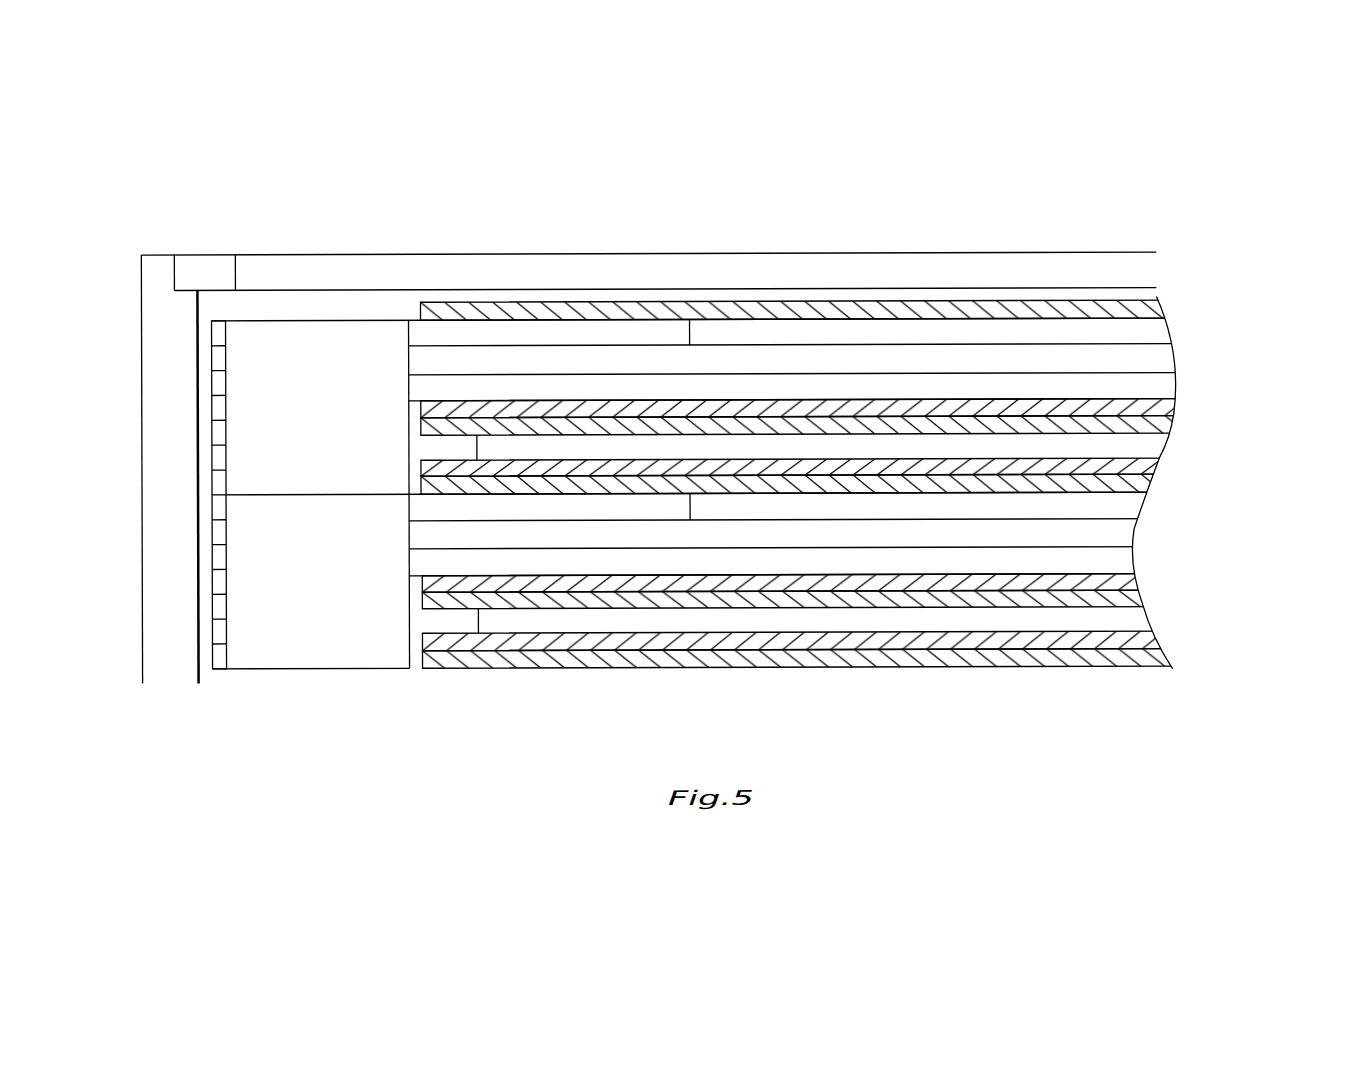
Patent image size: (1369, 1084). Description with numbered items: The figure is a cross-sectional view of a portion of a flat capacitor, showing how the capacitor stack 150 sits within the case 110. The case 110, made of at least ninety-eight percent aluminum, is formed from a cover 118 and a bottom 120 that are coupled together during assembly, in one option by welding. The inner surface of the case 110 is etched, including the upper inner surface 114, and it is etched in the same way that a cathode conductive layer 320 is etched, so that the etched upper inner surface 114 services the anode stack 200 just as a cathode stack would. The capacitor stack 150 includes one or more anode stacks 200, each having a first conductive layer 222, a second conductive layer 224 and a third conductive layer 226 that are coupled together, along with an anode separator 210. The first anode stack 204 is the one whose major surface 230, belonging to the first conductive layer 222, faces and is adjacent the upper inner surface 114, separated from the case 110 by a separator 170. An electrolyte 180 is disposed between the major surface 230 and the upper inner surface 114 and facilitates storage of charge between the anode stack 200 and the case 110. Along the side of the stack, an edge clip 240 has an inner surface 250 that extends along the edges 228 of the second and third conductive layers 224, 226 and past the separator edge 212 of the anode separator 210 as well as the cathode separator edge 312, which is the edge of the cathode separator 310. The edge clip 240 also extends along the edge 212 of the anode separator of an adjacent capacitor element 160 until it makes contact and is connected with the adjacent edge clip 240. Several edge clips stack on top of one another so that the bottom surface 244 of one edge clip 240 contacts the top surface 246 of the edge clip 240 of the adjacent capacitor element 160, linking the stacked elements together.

The case 110 is at (486, 254).
The upper inner surface 114 is at (222, 289).
The cover 118 is at (396, 250).
The bottom 120 is at (141, 313).
The capacitor stack 150 is at (505, 668).
The capacitor element 160 is at (1292, 298).
The separator 170 is at (1162, 306).
The electrolyte 180 is at (1158, 300).
The anode stack 200 is at (1213, 455).
The first anode stack 204 is at (1225, 313).
The anode separator 210 is at (1152, 482).
The separator edge 212 is at (421, 578).
The first conductive layer 222 is at (1175, 330).
The second conductive layer 224 is at (1176, 356).
The third conductive layer 226 is at (1177, 381).
The edges 228 is at (312, 496).
The major surface 230 is at (1073, 319).
The edge clip 240 is at (291, 600).
The bottom surface 244 is at (323, 493).
The top surface 246 is at (250, 496).
The inner surface 250 is at (416, 665).
The flow field plate 310 is at (1170, 430).
The cathode separator edge 312 is at (421, 595).
The cathode conductive layer 320 is at (1167, 446).